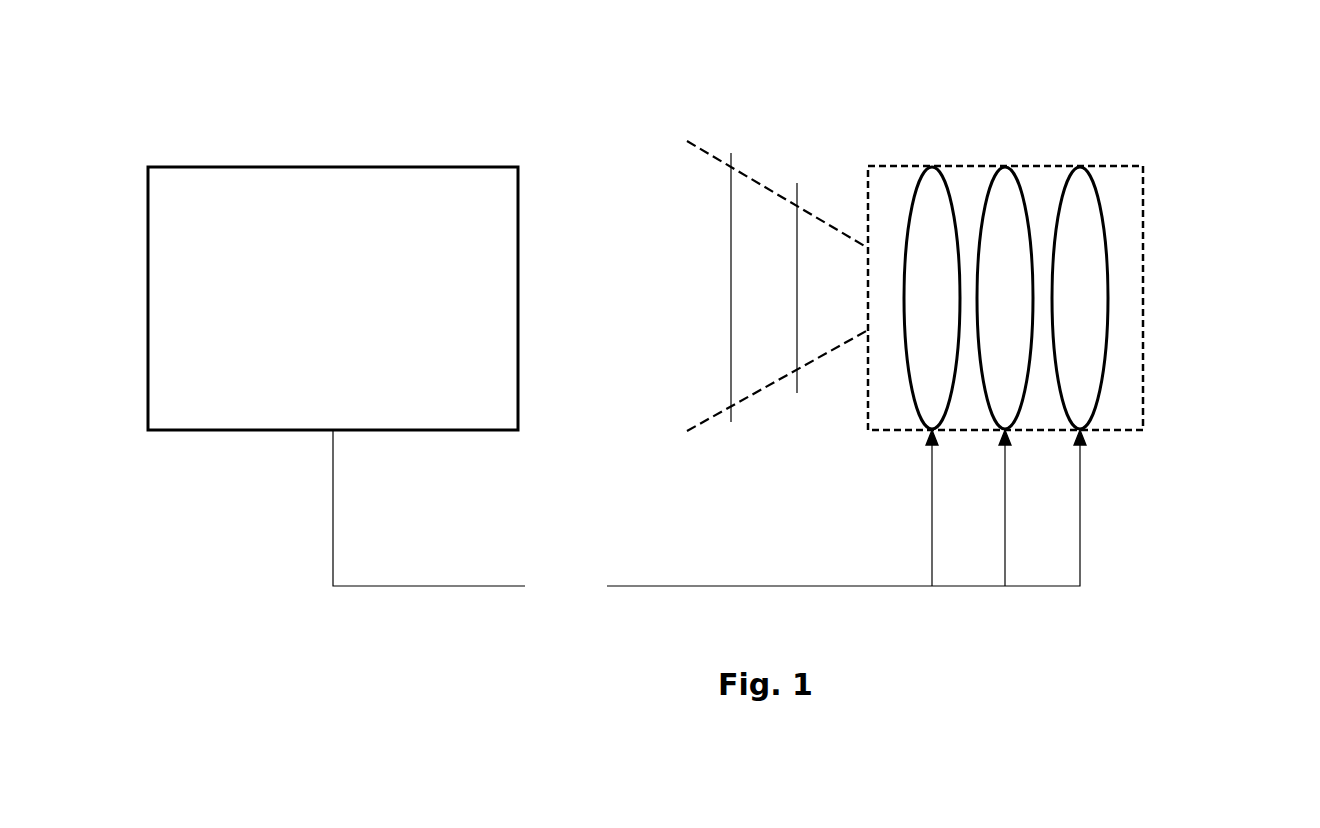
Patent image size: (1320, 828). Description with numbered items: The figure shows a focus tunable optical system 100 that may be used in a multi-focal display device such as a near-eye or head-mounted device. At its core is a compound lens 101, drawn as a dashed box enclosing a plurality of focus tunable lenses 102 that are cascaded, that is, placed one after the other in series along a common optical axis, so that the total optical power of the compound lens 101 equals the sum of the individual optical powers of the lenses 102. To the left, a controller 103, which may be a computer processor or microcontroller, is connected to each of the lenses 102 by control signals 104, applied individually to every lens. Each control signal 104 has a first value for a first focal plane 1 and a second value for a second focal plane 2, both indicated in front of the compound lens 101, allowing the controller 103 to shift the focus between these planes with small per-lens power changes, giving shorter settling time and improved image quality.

The focus tunable optical system 100 is at (578, 68).
The compound lens 101 is at (972, 167).
The focus tunable lenses 102 is at (952, 392).
The controller 103 is at (265, 166).
The control signal 104 is at (709, 517).
The first focal plane 1 is at (798, 269).
The second focal plane 2 is at (731, 271).